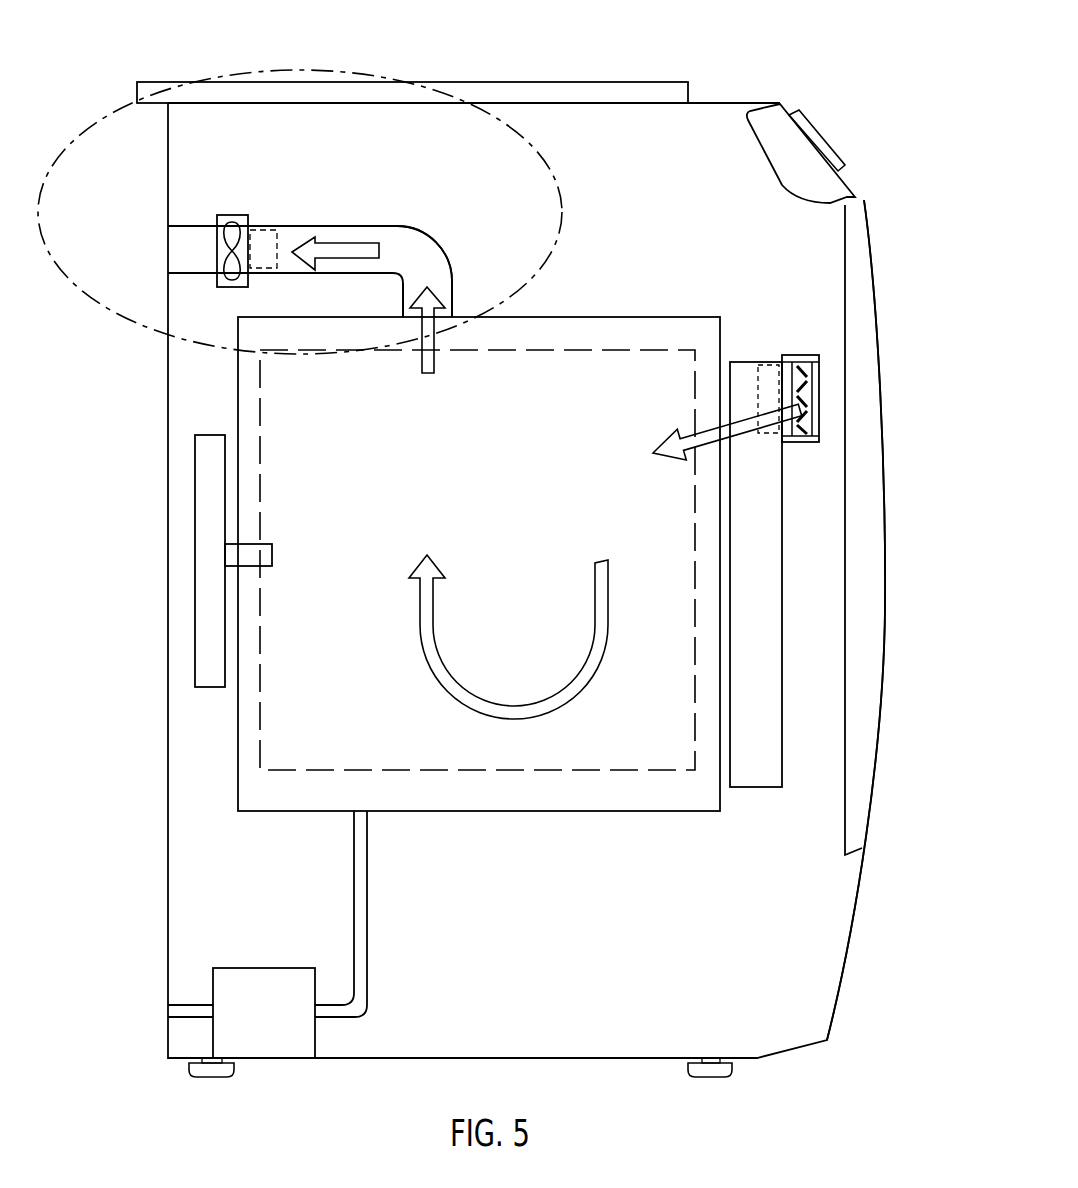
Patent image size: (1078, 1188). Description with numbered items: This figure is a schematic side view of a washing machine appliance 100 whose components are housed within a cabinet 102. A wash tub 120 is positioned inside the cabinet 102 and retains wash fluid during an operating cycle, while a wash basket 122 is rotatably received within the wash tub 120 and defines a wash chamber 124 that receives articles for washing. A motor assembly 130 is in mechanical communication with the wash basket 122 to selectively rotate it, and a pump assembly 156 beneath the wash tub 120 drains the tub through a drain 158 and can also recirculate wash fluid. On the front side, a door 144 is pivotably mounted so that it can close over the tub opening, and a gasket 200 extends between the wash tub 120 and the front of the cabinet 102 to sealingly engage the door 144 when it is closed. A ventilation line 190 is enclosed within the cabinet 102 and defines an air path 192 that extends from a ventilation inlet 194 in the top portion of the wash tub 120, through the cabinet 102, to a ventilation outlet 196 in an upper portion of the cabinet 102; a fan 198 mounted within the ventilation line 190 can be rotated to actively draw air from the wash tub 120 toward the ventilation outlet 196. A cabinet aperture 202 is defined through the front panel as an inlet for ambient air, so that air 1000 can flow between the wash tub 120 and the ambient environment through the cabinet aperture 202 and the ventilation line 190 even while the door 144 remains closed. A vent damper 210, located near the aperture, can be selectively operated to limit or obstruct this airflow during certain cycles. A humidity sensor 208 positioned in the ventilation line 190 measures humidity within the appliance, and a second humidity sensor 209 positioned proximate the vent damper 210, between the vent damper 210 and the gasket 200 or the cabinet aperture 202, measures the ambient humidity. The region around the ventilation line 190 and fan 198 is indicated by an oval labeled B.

The washing machine appliance 100 is at (517, 539).
The cabinet 102 is at (193, 930).
The wash tub 120 is at (310, 812).
The wash basket 122 is at (648, 350).
The wash chamber 124 is at (519, 507).
The motor assembly 130 is at (210, 672).
The door 144 is at (864, 727).
The pump assembly 156 is at (282, 1025).
The drain 158 is at (367, 814).
The ventilation line 190 is at (415, 228).
The air path 192 is at (420, 265).
The ventilation inlet 194 is at (447, 300).
The ventilation outlet 196 is at (168, 253).
The fan 198 is at (235, 228).
The gasket 200 is at (758, 787).
The cabinet aperture 202 is at (838, 200).
The humidity sensor 208 is at (263, 230).
The second humidity sensor 209 is at (767, 433).
The vent damper 210 is at (800, 357).
The air 1000 is at (338, 250).
The detail region B is at (98, 122).